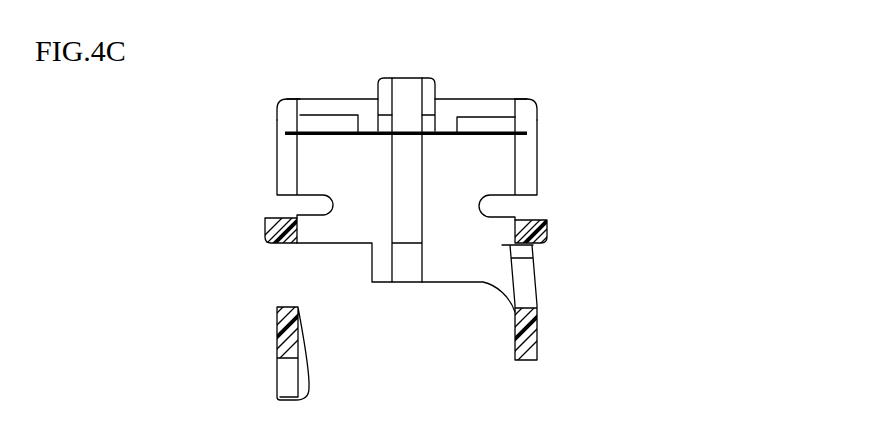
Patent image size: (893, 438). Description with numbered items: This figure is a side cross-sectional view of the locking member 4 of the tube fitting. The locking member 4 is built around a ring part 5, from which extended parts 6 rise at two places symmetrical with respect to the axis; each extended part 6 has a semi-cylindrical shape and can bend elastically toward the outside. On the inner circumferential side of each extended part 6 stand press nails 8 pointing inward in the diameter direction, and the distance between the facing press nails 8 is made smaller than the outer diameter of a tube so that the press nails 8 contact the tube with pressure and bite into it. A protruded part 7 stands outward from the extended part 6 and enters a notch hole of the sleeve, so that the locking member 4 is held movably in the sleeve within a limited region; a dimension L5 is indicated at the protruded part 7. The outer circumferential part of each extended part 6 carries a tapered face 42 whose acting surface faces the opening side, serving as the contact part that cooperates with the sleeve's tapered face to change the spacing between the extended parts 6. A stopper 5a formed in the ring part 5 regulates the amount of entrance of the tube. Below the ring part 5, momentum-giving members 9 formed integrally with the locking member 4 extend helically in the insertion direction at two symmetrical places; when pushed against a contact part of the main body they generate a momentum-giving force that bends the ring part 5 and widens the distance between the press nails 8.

The locking member 4 is at (445, 206).
The tapered face 42 is at (272, 103).
The extended part 6 is at (287, 162).
The press nail 8 is at (328, 132).
The protruded part 7 is at (372, 78).
The ring part 5 is at (268, 240).
The stopper 5a is at (409, 265).
The momentum-giving member 9 is at (287, 377).
The dimension L5 is at (435, 31).